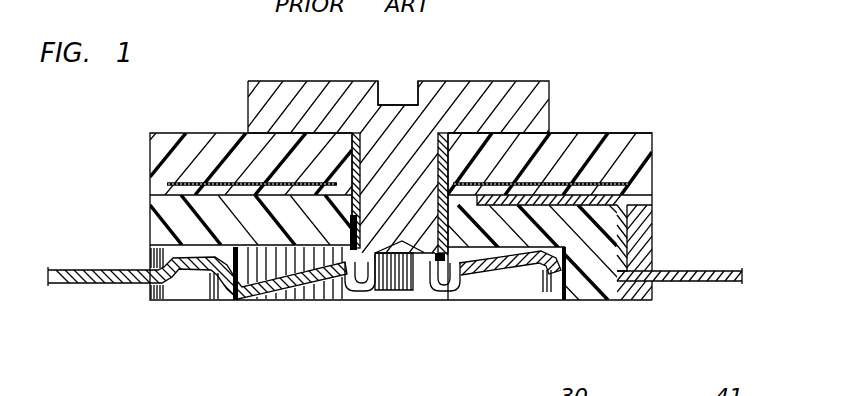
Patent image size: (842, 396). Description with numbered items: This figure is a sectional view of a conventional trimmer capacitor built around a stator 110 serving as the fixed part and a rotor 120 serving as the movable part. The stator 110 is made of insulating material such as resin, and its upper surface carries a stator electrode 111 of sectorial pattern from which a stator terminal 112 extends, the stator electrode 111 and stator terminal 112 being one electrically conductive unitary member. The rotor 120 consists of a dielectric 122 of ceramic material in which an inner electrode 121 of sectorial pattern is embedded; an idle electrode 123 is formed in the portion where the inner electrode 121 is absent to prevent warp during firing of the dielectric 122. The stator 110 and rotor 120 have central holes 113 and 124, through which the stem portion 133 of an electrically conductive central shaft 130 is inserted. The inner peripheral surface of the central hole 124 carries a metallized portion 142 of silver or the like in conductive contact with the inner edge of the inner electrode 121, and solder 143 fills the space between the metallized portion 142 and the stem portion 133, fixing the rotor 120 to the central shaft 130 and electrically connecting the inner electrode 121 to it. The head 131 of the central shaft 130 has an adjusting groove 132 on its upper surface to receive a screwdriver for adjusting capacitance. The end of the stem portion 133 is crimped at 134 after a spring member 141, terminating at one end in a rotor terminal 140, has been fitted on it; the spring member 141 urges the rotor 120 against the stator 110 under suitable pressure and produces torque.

The stator 110 is at (654, 236).
The stator electrode 111 is at (574, 252).
The stator terminal 112 is at (700, 283).
The central hole 113 is at (413, 253).
The rotor 120 is at (654, 169).
The inner electrode 121 is at (584, 183).
The dielectric 122 is at (647, 133).
The idle electrode 123 is at (190, 183).
The central hole 124 is at (440, 140).
The central shaft 130 is at (503, 81).
The head 131 is at (318, 120).
The adjusting groove 132 is at (393, 92).
The stem portion 133 is at (397, 283).
The crimped end 134 is at (452, 284).
The rotor terminal 140 is at (85, 284).
The spring member 141 is at (317, 278).
The metallized portion 142 is at (349, 160).
The solder 143 is at (360, 145).